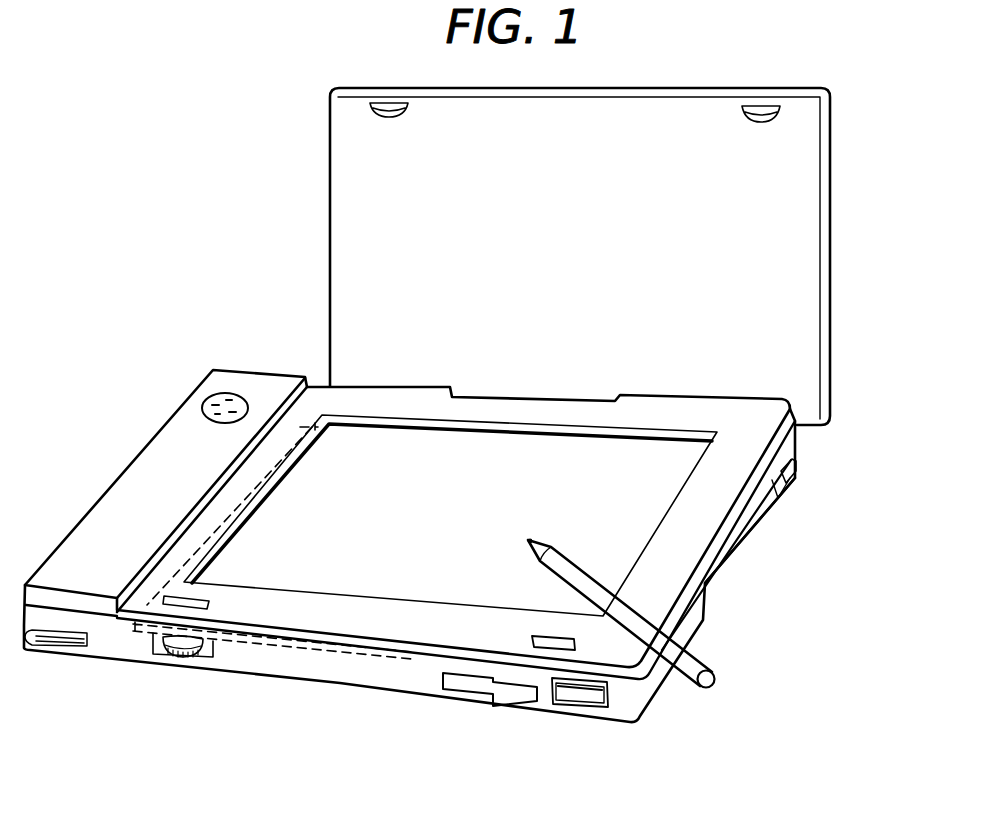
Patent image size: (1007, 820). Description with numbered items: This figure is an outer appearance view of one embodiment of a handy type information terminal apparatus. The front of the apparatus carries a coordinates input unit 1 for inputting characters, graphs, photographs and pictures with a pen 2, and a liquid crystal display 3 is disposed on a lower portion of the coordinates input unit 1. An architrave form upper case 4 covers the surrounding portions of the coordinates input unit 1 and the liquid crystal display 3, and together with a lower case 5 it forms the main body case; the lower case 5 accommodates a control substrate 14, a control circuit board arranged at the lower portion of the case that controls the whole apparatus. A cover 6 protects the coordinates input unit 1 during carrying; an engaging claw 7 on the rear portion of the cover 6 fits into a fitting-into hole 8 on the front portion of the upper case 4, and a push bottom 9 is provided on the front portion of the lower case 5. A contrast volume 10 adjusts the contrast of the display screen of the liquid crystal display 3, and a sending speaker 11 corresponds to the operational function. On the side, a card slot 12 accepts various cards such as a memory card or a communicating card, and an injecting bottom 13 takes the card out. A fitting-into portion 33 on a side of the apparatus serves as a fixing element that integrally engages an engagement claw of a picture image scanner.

The coordinates input unit 1 is at (385, 562).
The pen 2 is at (720, 683).
The liquid crystal display 3 is at (425, 563).
The upper case 4 is at (265, 613).
The lower case 5 is at (285, 667).
The cover 6 is at (603, 106).
The engaging claw 7 is at (757, 107).
The fitting-into hole 8 is at (557, 648).
The push bottom 9 is at (594, 698).
The contrast volume 10 is at (181, 662).
The sending speaker 11 is at (221, 398).
The card slot 12 is at (746, 540).
The injecting bottom 13 is at (800, 469).
The control substrate 14 is at (212, 535).
The fitting-into portion 33 is at (475, 700).